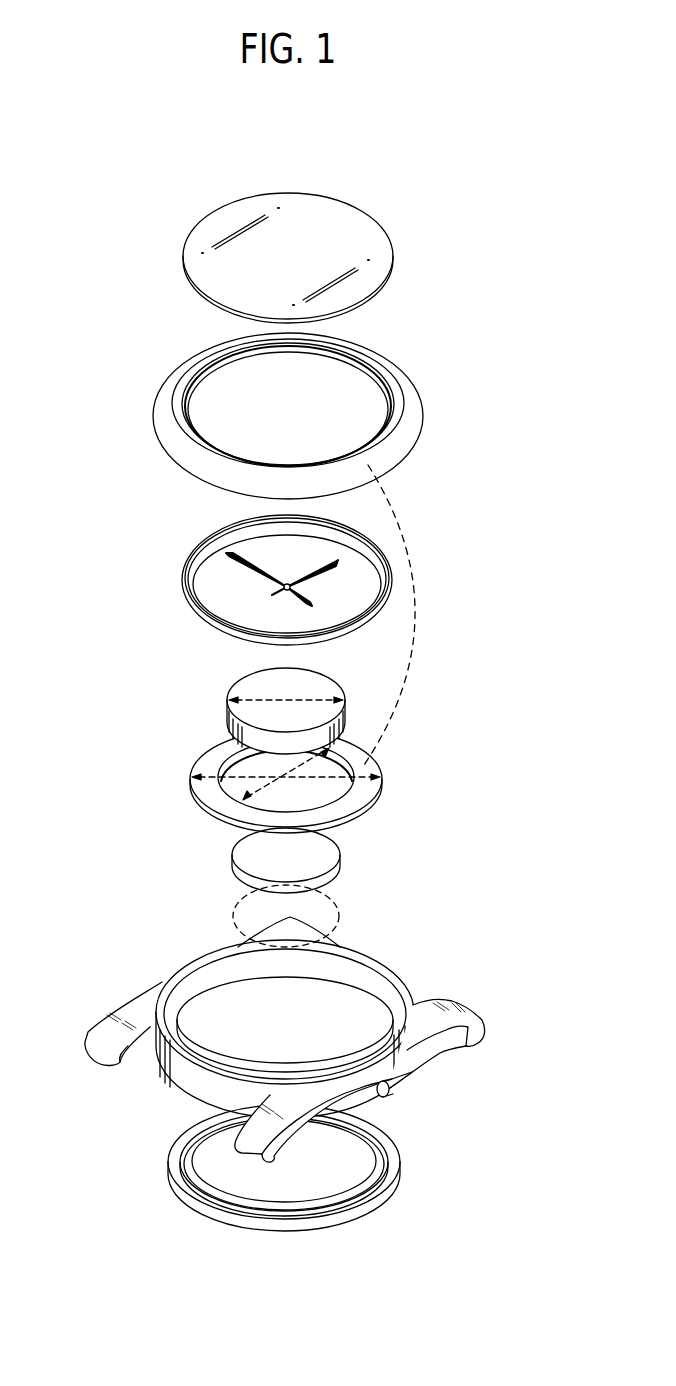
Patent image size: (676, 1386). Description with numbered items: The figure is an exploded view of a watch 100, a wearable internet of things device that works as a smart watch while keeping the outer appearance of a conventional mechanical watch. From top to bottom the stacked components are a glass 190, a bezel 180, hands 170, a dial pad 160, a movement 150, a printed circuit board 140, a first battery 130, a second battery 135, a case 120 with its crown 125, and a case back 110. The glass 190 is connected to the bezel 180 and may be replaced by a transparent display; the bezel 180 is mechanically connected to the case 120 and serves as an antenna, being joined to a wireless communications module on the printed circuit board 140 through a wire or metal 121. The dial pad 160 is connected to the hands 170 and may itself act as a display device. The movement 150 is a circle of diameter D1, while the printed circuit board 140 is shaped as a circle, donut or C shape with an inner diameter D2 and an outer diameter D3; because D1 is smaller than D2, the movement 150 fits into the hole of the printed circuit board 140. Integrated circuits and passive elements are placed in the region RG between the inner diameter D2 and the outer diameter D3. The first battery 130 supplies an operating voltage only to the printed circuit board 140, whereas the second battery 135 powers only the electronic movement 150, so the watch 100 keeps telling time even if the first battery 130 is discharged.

The watch 100 is at (407, 177).
The case back 110 is at (177, 1152).
The case 120 is at (143, 1001).
The wire or metal 121 is at (413, 618).
The crown 125 is at (389, 1092).
The first battery 130 is at (240, 848).
The second battery 135 is at (240, 907).
The printed circuit board 140 is at (197, 761).
The movement 150 is at (227, 698).
The dial pad 160 is at (192, 588).
The hands 170 is at (224, 555).
The bezel 180 is at (160, 417).
The glass 190 is at (188, 255).
The region RG is at (357, 803).
The diameter of the movement D1 is at (286, 689).
The inner diameter of the PCB D2 is at (222, 787).
The outer diameter of the PCB D3 is at (317, 777).